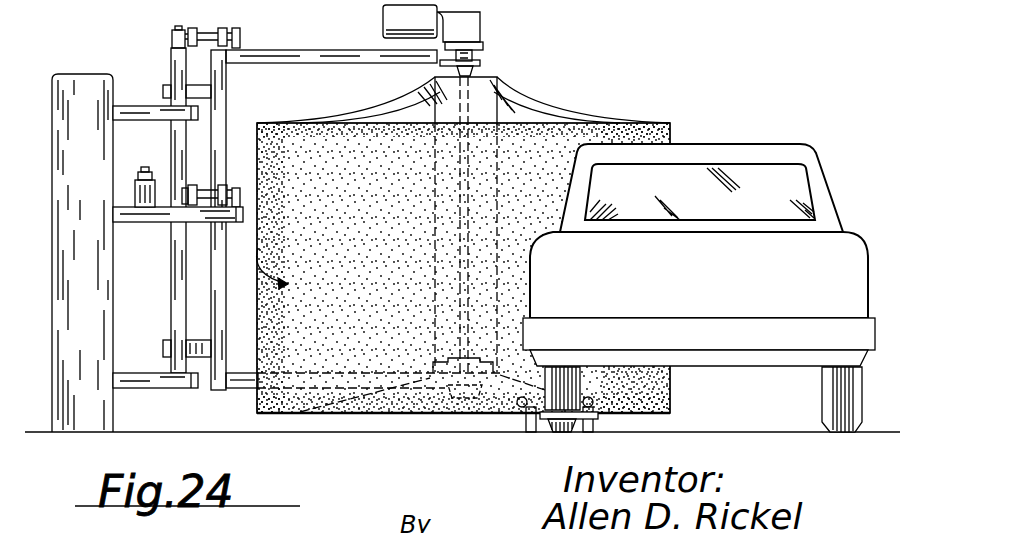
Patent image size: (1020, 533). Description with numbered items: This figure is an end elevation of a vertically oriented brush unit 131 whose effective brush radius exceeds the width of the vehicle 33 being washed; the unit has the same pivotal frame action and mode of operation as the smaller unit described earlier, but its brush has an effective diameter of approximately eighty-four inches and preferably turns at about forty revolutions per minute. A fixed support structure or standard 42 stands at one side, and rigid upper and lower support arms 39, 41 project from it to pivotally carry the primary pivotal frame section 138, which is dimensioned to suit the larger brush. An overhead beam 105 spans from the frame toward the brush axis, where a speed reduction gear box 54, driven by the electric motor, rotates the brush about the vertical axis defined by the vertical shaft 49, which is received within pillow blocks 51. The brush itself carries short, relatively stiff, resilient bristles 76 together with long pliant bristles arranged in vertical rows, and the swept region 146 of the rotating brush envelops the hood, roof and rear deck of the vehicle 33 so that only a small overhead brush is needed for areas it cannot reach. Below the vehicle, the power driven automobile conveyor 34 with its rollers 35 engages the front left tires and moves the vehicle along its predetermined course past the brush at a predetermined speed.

The brush unit 131 is at (168, 39).
The primary pivotal frame section 138 is at (180, 72).
The upper support arm 39 is at (141, 108).
The support structure or standard 42 is at (95, 279).
The lower support arm 41 is at (133, 390).
The horizontal beam 105 is at (348, 50).
The speed reduction gear box 54 is at (470, 22).
The pillow blocks 51 is at (477, 70).
The vertical shaft 49 is at (500, 100).
The short, relatively stiff, resilient bristles 76 is at (435, 78).
The spray enclosure 146 is at (672, 128).
The vehicle 33 is at (750, 280).
The automobile conveyor 34 is at (522, 410).
The rollers 35 is at (548, 420).